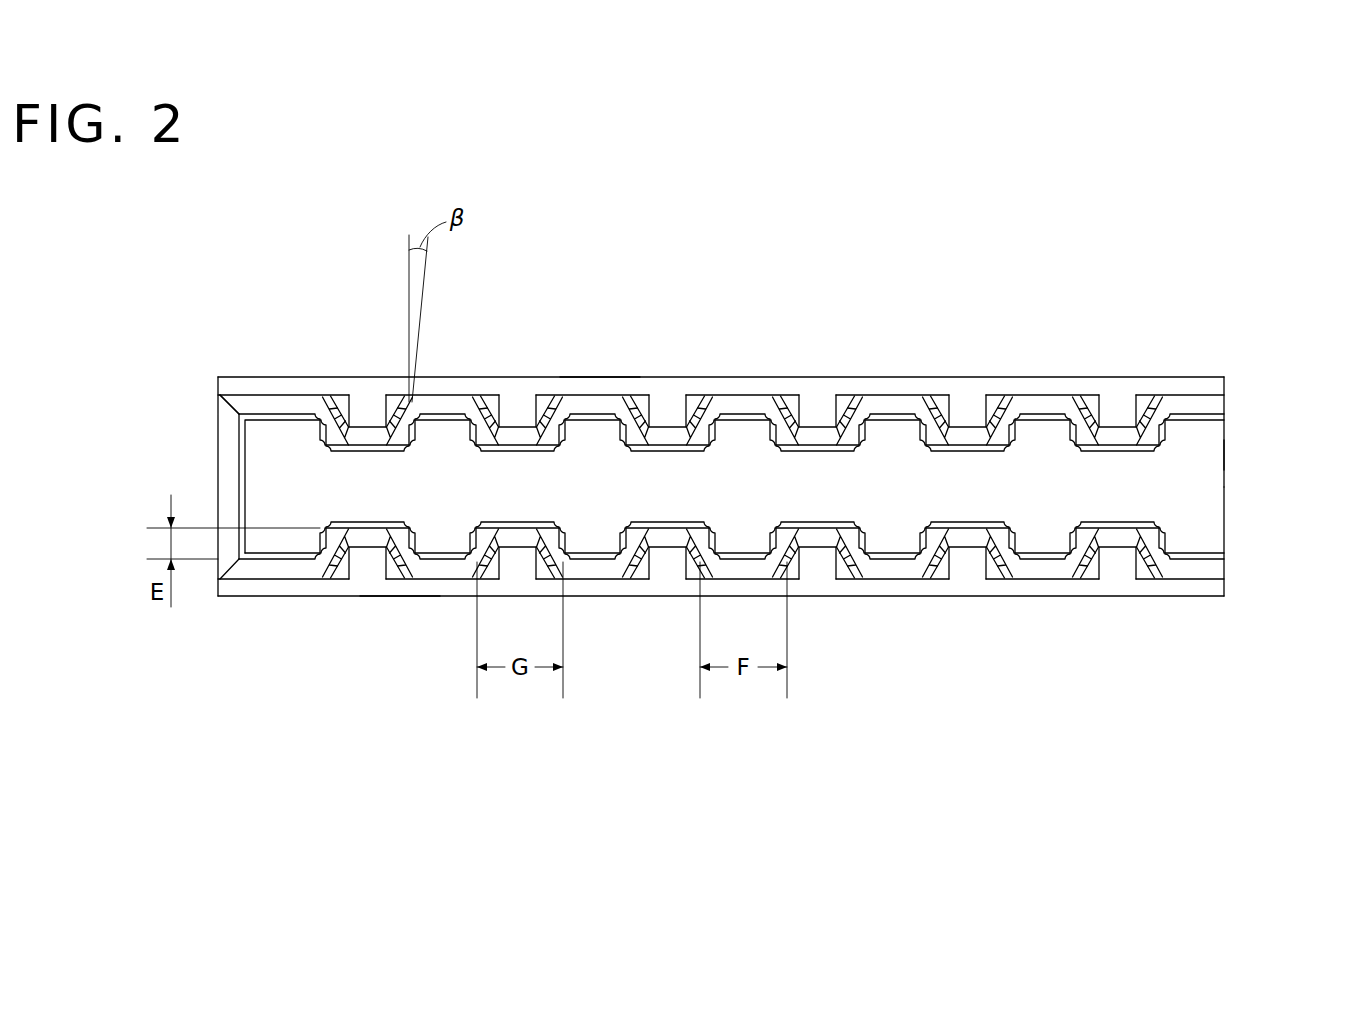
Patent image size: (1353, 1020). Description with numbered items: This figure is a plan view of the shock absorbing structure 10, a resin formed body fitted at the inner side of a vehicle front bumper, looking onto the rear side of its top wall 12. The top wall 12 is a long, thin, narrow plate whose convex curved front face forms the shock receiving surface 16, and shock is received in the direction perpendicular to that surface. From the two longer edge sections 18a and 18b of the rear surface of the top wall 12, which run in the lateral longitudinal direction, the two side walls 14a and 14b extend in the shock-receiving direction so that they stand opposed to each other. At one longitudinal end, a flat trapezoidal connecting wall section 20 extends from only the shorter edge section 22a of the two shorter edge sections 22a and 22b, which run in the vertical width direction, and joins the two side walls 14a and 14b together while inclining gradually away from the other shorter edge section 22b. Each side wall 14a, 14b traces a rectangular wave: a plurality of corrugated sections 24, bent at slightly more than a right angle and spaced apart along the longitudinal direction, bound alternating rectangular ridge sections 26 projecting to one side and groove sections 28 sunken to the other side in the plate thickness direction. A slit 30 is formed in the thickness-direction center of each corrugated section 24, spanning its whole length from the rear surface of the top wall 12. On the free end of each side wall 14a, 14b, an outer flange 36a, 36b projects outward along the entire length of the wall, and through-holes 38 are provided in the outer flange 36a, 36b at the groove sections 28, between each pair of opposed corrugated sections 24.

The shock absorbing structure 10 is at (812, 328).
The top wall 12 is at (1197, 493).
The side wall 14a is at (274, 386).
The side wall 14b is at (274, 590).
The shock receiving surface 16 is at (270, 488).
The longer edge section 18a is at (1196, 396).
The longer edge section 18b is at (1233, 576).
The connecting wall section 20 is at (222, 455).
The shorter edge section 22a is at (228, 402).
The shorter edge section 22b is at (1232, 455).
The corrugated section 24 is at (352, 396).
The ridge section 26 is at (305, 398).
The groove section 28 is at (352, 438).
The slit 30 is at (322, 432).
The outer flange 36a is at (598, 378).
The outer flange 36b is at (400, 597).
The through-hole 38 is at (538, 398).